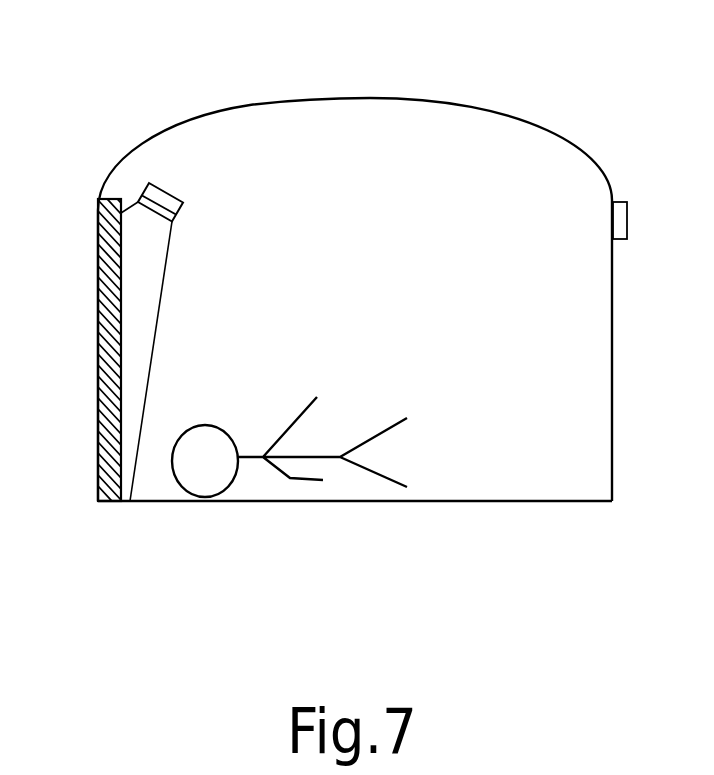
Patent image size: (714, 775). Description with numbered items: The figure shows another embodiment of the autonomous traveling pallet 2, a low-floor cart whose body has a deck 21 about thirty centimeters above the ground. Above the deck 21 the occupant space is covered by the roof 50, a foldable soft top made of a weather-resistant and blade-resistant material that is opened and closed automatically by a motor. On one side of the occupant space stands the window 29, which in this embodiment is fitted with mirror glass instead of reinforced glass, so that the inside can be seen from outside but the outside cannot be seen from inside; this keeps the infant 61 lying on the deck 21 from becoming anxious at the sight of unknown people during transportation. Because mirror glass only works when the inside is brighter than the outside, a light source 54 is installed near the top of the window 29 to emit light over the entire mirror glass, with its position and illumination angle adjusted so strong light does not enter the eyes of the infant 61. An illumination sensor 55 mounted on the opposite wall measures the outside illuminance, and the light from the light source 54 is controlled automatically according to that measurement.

The autonomous traveling pallet 2 is at (181, 107).
The roof 50 is at (399, 99).
The light source 54 is at (147, 186).
The illumination sensor 55 is at (628, 206).
The window 29 is at (98, 333).
The infant 61 is at (202, 425).
The deck 21 is at (504, 501).